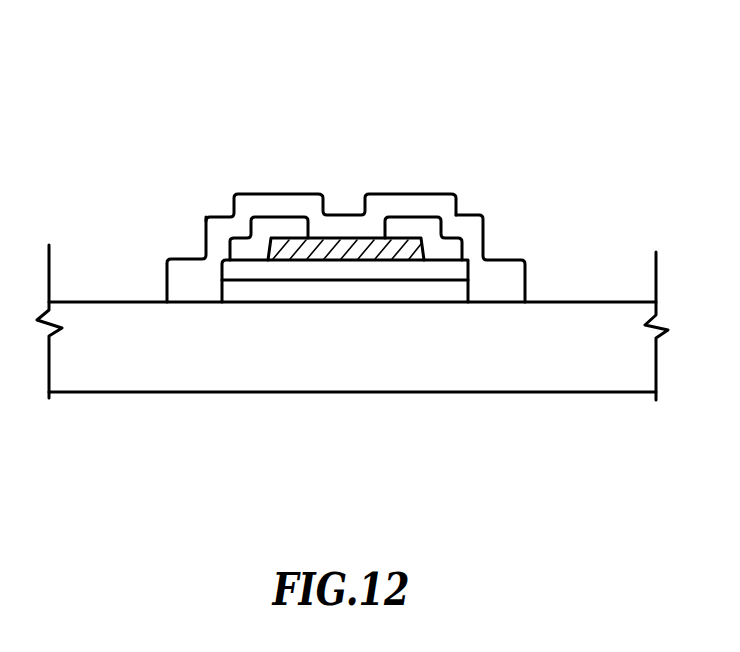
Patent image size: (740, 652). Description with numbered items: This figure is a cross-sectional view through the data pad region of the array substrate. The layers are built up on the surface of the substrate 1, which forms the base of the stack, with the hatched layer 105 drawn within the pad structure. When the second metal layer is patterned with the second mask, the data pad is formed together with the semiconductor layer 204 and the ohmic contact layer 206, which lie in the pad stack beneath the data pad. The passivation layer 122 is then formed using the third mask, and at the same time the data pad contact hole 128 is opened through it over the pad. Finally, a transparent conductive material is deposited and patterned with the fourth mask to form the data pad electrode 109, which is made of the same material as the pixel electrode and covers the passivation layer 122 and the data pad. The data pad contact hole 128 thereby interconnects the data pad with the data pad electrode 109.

The substrate 1 is at (480, 365).
The semiconductor layer 204 is at (238, 291).
The ohmic contact layer 206 is at (445, 273).
The semiconductor layer 105 is at (358, 238).
The passivation layer 122 is at (278, 223).
The data pad electrode 109 is at (480, 232).
The data pad contact hole 128 is at (318, 223).